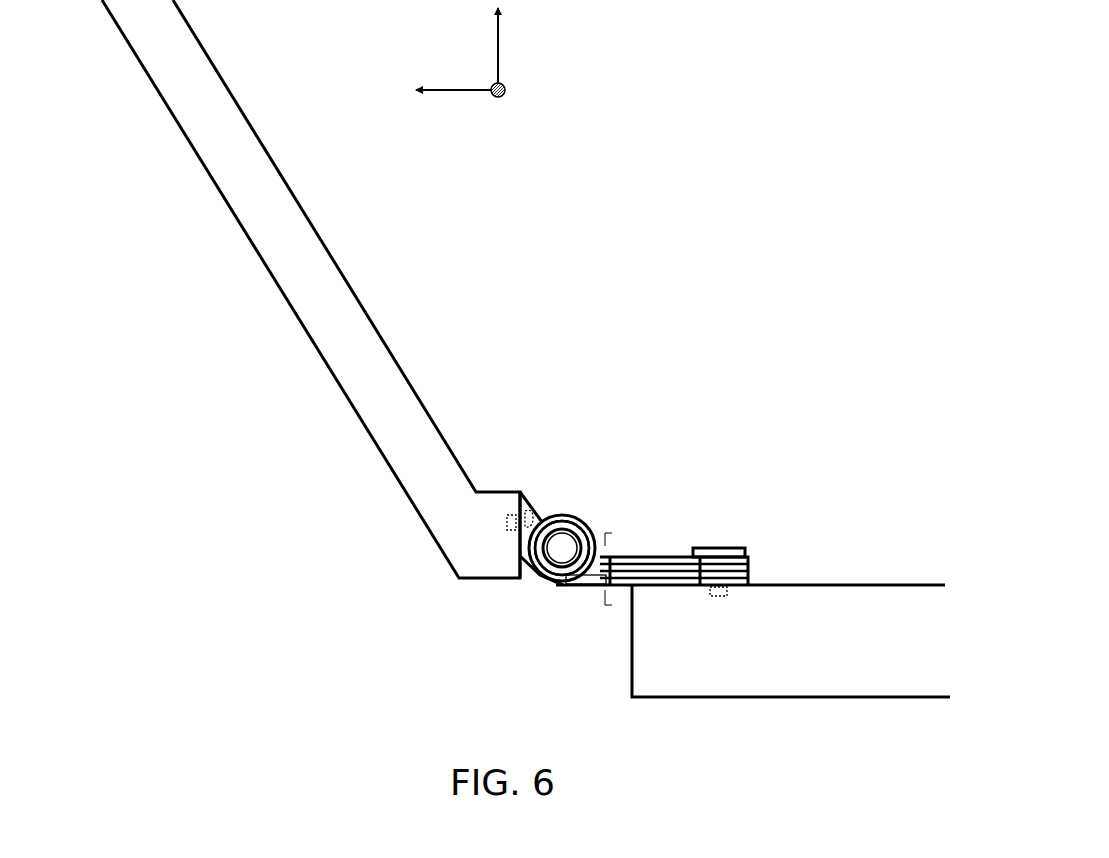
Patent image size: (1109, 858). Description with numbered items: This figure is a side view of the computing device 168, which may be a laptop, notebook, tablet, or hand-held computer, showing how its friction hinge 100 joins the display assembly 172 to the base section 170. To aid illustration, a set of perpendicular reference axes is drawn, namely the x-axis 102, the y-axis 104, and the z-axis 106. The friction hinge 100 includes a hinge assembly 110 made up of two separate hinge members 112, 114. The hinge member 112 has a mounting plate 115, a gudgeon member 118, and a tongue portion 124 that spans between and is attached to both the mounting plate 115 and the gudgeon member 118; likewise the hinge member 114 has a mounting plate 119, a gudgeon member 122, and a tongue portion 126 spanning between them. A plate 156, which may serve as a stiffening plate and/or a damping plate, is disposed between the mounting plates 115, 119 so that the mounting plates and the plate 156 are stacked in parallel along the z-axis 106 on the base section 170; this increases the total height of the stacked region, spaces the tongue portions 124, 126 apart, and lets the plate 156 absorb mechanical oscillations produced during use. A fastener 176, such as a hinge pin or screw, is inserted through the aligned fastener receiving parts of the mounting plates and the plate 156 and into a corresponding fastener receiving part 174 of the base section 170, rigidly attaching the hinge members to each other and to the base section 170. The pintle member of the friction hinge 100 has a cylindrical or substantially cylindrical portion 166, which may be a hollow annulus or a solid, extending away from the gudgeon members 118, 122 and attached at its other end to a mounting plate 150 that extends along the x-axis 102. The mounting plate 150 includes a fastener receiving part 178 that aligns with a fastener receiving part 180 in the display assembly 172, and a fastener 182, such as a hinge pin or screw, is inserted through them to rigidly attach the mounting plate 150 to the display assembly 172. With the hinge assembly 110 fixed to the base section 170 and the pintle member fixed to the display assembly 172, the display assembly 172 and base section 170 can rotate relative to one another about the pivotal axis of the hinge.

The friction hinge 100 is at (672, 478).
The x-axis 102 is at (508, 90).
The y-axis 104 is at (455, 85).
The z-axis 106 is at (499, 33).
The hinge assembly 110 is at (722, 492).
The hinge member 112 is at (748, 554).
The hinge member 114 is at (748, 576).
The mounting plate 115 is at (640, 557).
The gudgeon member 118 is at (560, 517).
The mounting plate 119 is at (668, 588).
The gudgeon member 122 is at (562, 548).
The tongue portion 124 is at (582, 585).
The tongue portion 126 is at (546, 578).
The mounting plate 150 is at (527, 512).
The plate 156 is at (640, 586).
The cylindrical portion 166 is at (570, 545).
The computing device 168 is at (470, 337).
The base section 170 is at (940, 580).
The display assembly 172 is at (354, 290).
The fastener receiving part 174 is at (722, 597).
The fastener 176 is at (745, 548).
The fastener receiving part 178 is at (541, 505).
The fastener receiving part 180 is at (510, 525).
The fastener 182 is at (507, 520).